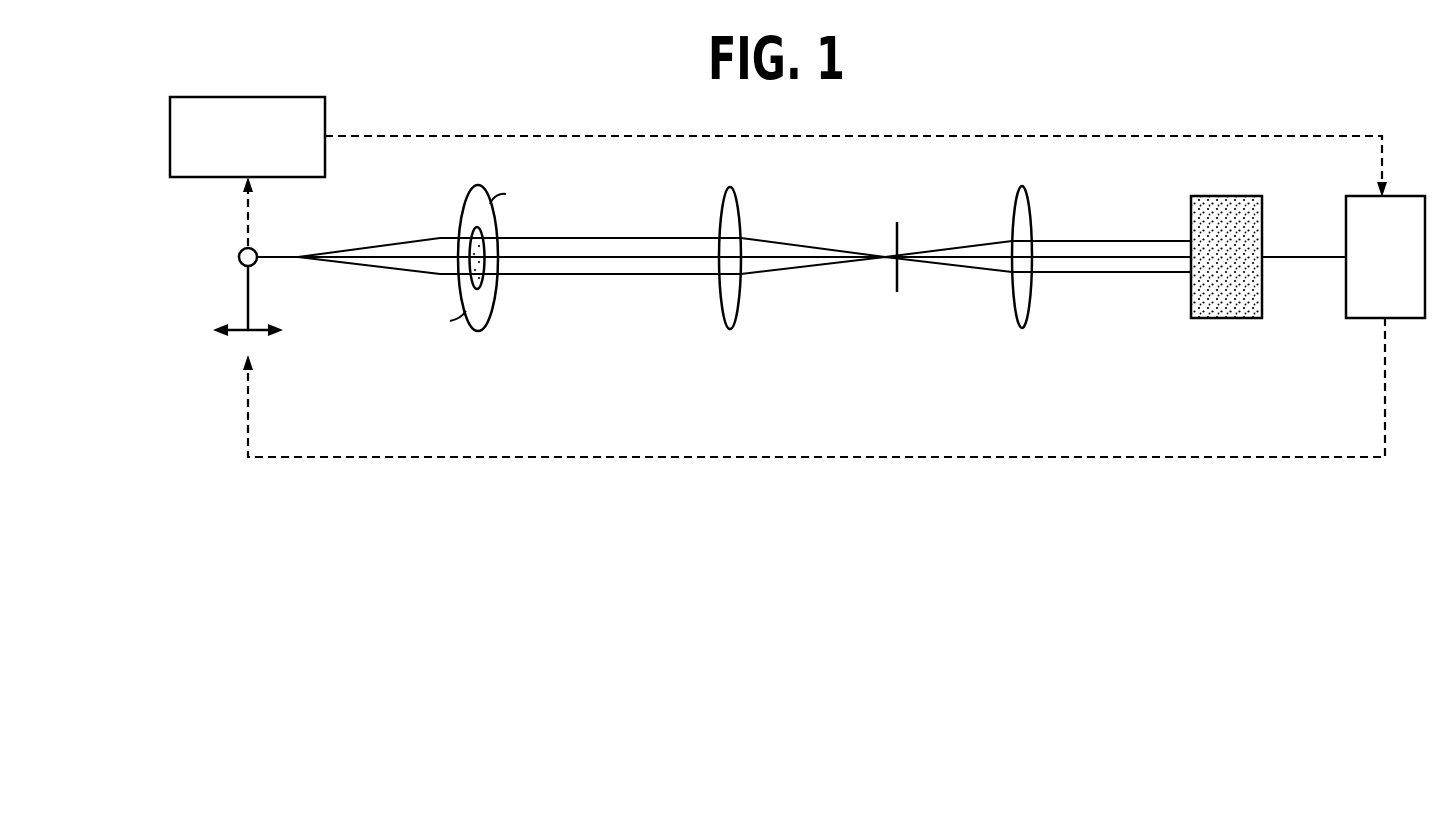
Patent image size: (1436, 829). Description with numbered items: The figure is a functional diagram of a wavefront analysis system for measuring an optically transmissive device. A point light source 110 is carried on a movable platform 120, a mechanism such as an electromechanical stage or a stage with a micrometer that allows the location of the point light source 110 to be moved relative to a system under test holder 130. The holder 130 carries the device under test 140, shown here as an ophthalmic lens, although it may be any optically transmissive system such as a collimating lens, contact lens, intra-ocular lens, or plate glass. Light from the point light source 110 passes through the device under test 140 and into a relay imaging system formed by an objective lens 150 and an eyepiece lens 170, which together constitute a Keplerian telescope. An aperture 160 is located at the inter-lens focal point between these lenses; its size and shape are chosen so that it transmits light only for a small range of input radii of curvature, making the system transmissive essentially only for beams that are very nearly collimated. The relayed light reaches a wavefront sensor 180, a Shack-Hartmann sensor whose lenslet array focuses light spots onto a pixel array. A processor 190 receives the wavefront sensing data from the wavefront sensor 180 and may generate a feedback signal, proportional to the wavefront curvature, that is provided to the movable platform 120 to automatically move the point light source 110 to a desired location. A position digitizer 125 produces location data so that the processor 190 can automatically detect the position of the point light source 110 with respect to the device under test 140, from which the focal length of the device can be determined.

The point light source 110 is at (257, 246).
The movable platform 120 is at (288, 333).
The position digitizer 125 is at (325, 102).
The system under test holder 130 is at (453, 303).
The device under test 140 is at (507, 303).
The objective lens 150 is at (728, 328).
The aperture 160 is at (890, 275).
The eyepiece lens 170 is at (1022, 328).
The wavefront sensor 180 is at (1223, 320).
The processor 190 is at (1365, 320).